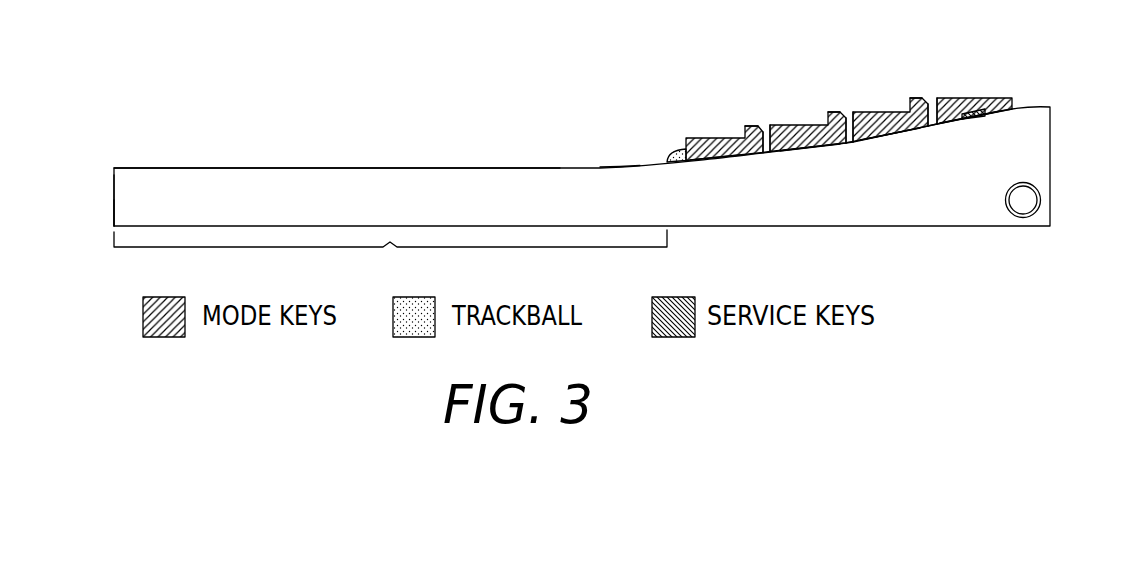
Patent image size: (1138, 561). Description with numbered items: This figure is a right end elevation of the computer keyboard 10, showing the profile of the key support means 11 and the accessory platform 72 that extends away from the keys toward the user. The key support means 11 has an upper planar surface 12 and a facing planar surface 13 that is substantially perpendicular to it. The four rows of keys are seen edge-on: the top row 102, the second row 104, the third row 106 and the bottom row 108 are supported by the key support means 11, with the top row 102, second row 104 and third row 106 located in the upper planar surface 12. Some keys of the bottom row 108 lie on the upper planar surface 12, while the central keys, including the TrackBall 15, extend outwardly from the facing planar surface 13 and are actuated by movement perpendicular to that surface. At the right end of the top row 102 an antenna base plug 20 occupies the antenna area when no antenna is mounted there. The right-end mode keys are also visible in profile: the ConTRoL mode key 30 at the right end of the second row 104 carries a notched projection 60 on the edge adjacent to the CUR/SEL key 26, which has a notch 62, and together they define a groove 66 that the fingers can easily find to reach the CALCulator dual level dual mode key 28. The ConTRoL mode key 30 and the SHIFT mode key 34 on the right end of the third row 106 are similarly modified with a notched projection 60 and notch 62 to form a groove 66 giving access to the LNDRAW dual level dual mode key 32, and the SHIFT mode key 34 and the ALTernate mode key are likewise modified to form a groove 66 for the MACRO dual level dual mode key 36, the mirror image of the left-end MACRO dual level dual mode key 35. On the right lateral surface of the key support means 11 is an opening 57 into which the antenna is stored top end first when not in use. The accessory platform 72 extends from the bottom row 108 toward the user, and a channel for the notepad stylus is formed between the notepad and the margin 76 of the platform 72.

The keyboard 10 is at (124, 186).
The key support means 11 is at (171, 178).
The upper planar surface 12 is at (238, 167).
The facing planar surface 13 is at (619, 151).
The TrackBall 15 is at (672, 156).
The antenna base plug 20 is at (977, 110).
The CUR/SEL key 26 is at (985, 98).
The CALCulator dual level dual mode key 28 is at (933, 126).
The ConTRoL mode key 30 is at (880, 112).
The LNDRAW dual level dual mode key 32 is at (850, 143).
The SHIFT mode key 34 is at (800, 125).
The MACRO dual level dual mode key 35 is at (712, 137).
The MACRO dual level dual mode key 36 is at (767, 153).
The opening 57 is at (1025, 200).
The notched projection 60 is at (752, 125).
The notch 62 is at (773, 126).
The groove 66 is at (766, 125).
The accessory platform 72 is at (390, 254).
The margin 76 is at (99, 216).
The top row 102 is at (957, 131).
The second row 104 is at (897, 147).
The third row 106 is at (812, 162).
The bottom row 108 is at (719, 175).